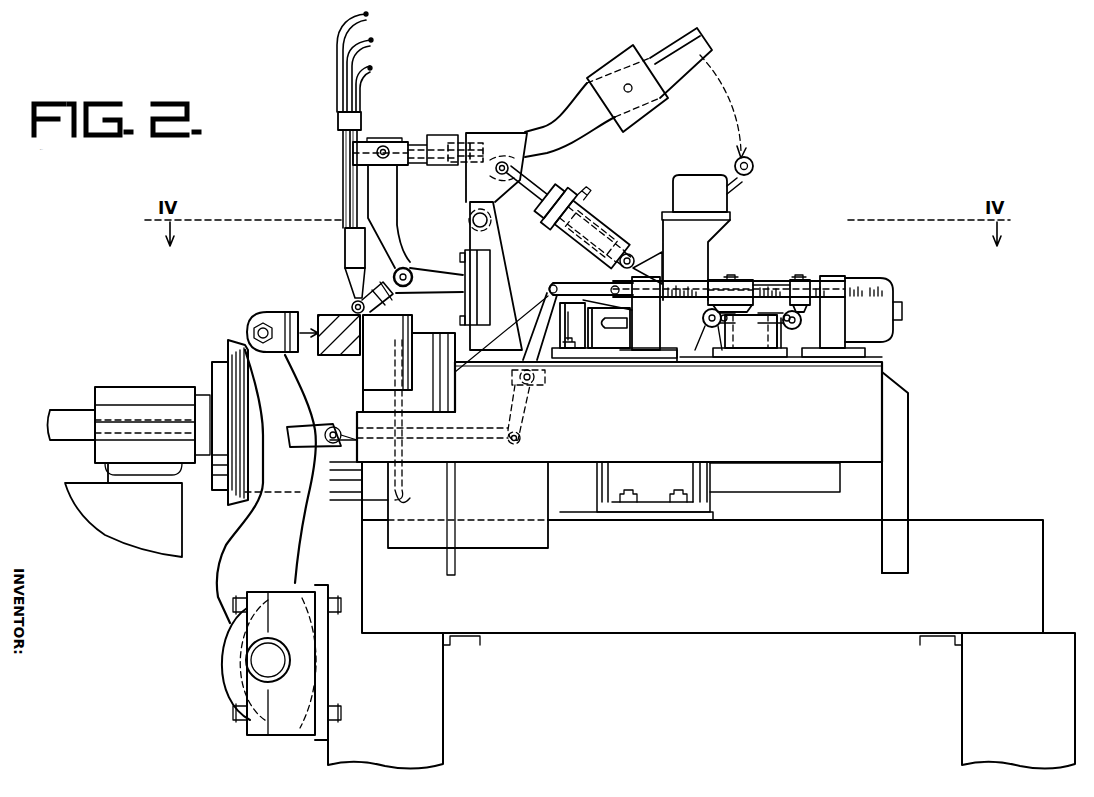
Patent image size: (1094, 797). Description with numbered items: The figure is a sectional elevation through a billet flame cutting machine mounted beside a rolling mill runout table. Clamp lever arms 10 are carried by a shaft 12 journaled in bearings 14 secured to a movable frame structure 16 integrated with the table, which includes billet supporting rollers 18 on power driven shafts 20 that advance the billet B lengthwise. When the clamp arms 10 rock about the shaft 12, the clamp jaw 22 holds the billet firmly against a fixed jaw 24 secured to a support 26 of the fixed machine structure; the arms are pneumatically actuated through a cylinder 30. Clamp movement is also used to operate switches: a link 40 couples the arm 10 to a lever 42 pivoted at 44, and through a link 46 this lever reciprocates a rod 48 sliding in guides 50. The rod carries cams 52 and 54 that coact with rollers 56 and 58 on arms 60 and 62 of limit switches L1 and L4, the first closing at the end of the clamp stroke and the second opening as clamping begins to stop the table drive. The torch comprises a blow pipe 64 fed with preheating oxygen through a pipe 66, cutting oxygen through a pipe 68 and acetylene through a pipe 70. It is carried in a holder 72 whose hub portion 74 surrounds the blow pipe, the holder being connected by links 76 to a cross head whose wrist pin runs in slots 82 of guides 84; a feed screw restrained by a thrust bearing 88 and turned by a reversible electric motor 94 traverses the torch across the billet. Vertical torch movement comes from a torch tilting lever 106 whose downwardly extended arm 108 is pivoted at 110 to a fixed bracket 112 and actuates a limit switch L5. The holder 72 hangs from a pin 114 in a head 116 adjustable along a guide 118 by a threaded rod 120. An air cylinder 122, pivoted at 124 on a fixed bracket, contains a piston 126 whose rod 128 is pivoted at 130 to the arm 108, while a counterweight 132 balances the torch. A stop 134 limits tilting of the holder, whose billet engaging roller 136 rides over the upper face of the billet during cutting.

The clamp lever arms 10 is at (226, 577).
The shaft 12 is at (262, 660).
The bearings 14 is at (226, 668).
The movable frame structure 16 is at (430, 745).
The billet supporting rollers 18 is at (238, 365).
The power driven shafts 20 is at (72, 414).
The clamp jaw 22 is at (250, 330).
The fixed jaw 24 is at (370, 356).
The support 26 is at (440, 404).
The cylinder 30 is at (660, 500).
The link 40 is at (356, 447).
The lever 42 is at (527, 420).
The pivot 44 is at (518, 378).
The link 46 is at (580, 290).
The rod 48 is at (758, 292).
The guides 50 is at (650, 308).
The cam 52 is at (730, 305).
The cam 54 is at (798, 302).
The roller 56 is at (708, 328).
The roller 58 is at (802, 318).
The arm 60 is at (718, 330).
The arm 62 is at (787, 312).
The blow pipe 64 is at (348, 172).
The pipe 66 is at (367, 13).
The pipe 68 is at (372, 38).
The pipe 70 is at (372, 65).
The holder 72 is at (345, 183).
The hub portion 74 is at (347, 258).
The links 76 is at (438, 270).
The slots 82 is at (620, 330).
The guides 84 is at (610, 336).
The thrust bearing 88 is at (573, 322).
The reversible electric motor 94 is at (893, 328).
The torch tilting lever 106 is at (680, 48).
The downwardly extended arm 108 is at (468, 187).
The pivot 110 is at (473, 217).
The fixed bracket 112 is at (496, 270).
The pin 114 is at (383, 146).
The head 116 is at (402, 140).
The guide 118 is at (355, 146).
The threaded rod 120 is at (455, 145).
The air cylinder 122 is at (604, 230).
The pivot 124 is at (638, 245).
The piston 126 is at (588, 232).
The rod 128 is at (540, 192).
The pivot 130 is at (502, 162).
The counterweight 132 is at (603, 72).
The stop 134 is at (386, 297).
The billet engaging roller 136 is at (352, 303).
The billet B is at (316, 320).
The limit switch L1 is at (785, 330).
The limit switch L4 is at (756, 340).
The limit switch L5 is at (690, 180).